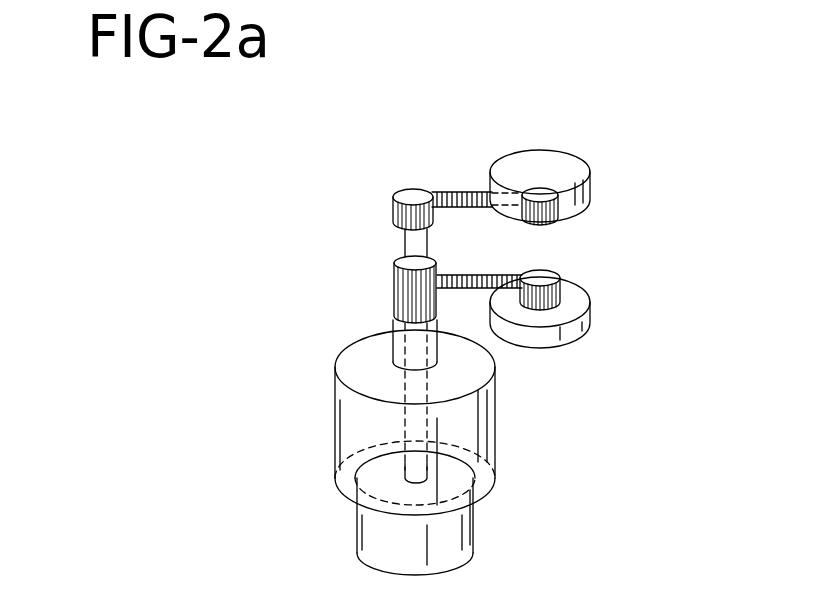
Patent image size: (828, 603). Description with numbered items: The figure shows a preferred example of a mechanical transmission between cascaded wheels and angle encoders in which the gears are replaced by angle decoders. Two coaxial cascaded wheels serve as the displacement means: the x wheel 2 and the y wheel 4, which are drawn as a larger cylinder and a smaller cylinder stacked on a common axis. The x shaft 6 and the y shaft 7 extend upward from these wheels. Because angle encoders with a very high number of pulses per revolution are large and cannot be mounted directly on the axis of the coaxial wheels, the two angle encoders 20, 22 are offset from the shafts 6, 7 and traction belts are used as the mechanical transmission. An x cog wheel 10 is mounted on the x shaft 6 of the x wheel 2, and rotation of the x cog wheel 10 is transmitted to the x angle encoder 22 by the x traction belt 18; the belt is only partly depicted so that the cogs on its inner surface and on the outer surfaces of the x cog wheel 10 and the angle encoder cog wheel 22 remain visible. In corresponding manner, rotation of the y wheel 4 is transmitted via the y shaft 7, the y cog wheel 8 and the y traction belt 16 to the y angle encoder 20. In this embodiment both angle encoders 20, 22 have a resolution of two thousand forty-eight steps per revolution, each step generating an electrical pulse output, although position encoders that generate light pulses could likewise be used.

The x wheel 2 is at (452, 535).
The y wheel 4 is at (478, 420).
The x shaft 6 is at (417, 247).
The y shaft 7 is at (395, 345).
The y cog wheel 8 is at (392, 282).
The x cog wheel 10 is at (413, 190).
The y traction belt 16 is at (485, 275).
The x traction belt 18 is at (460, 193).
The y angle encoder 20 is at (592, 325).
The x angle encoder 22 is at (589, 195).